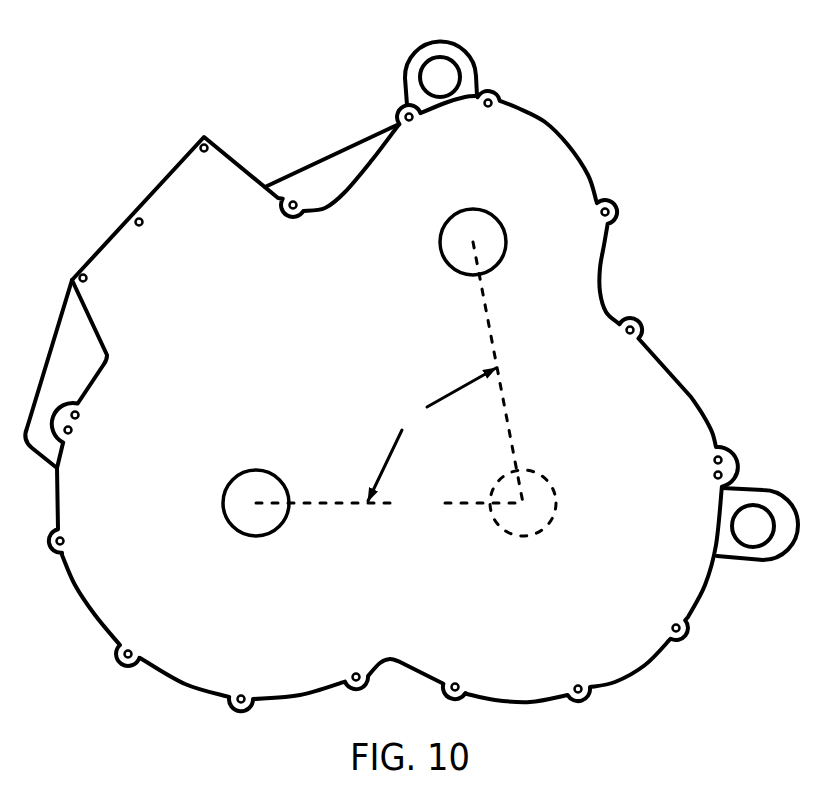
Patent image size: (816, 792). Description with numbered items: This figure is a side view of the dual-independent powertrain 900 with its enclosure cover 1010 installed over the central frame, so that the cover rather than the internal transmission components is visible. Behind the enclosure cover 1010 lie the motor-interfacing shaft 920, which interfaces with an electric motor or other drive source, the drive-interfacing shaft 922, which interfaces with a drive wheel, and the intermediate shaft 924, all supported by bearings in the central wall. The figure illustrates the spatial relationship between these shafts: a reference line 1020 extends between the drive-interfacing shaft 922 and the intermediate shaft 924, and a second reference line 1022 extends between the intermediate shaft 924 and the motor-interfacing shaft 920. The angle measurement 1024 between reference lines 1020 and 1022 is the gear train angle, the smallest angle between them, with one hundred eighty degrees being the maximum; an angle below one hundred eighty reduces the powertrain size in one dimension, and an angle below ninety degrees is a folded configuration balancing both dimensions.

The dual-independent powertrain 900 is at (629, 700).
The enclosure cover 1010 is at (541, 187).
The motor-interfacing shaft 920 is at (448, 227).
The drive-interfacing shaft 922 is at (243, 533).
The intermediate shaft 924 is at (553, 485).
The reference line 1020 is at (389, 503).
The reference line 1022 is at (497, 372).
The angle measurement 1024 is at (432, 434).